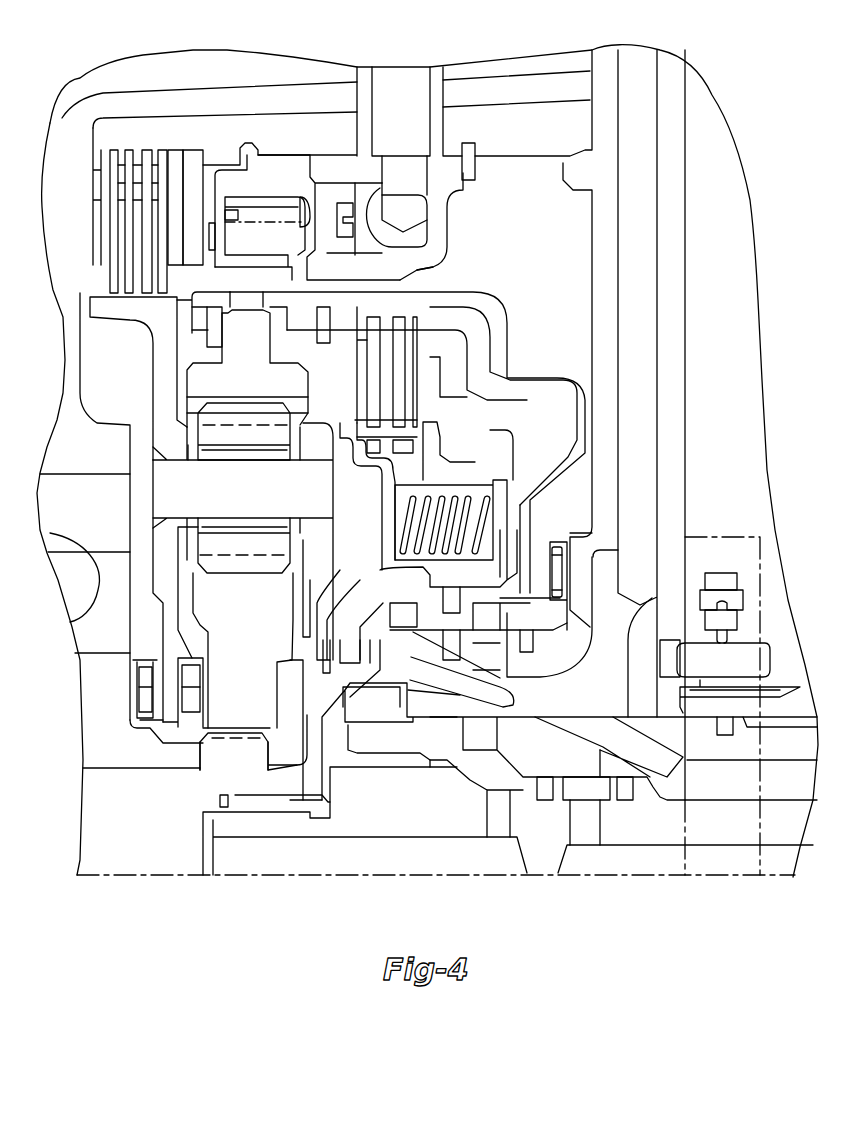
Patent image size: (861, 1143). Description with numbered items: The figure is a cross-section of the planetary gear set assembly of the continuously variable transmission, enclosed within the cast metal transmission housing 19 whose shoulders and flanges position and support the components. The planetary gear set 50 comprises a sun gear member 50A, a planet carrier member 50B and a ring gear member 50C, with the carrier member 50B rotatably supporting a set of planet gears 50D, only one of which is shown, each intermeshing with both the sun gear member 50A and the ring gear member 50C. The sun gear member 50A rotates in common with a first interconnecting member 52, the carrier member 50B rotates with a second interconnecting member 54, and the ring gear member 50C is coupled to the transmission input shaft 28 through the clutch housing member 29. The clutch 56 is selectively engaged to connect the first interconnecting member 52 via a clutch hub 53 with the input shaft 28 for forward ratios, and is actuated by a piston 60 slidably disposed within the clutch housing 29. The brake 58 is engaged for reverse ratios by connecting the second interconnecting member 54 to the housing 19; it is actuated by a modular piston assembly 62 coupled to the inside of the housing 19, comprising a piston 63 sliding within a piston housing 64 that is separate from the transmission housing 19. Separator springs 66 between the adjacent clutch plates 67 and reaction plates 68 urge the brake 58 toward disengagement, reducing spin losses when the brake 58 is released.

The transmission housing 19 is at (123, 107).
The transmission input shaft 28 is at (388, 837).
The clutch housing member 29 is at (473, 298).
The planetary gear set 50 is at (247, 806).
The sun gear member 50A is at (202, 775).
The planet carrier member 50B is at (150, 410).
The ring gear member 50C is at (282, 363).
The planet gears 50D is at (247, 573).
The first interconnecting member 52 is at (130, 772).
The clutch hub 53 is at (368, 490).
The second interconnecting member 54 is at (130, 320).
The clutch 56 is at (436, 347).
The brake 58 is at (138, 155).
The piston 60 is at (513, 442).
The piston assembly 62 is at (465, 213).
The piston 63 is at (268, 230).
The piston housing 64 is at (452, 245).
The separator springs 66 is at (127, 165).
The clutch plates 67 is at (90, 275).
The reaction plates 68 is at (101, 187).